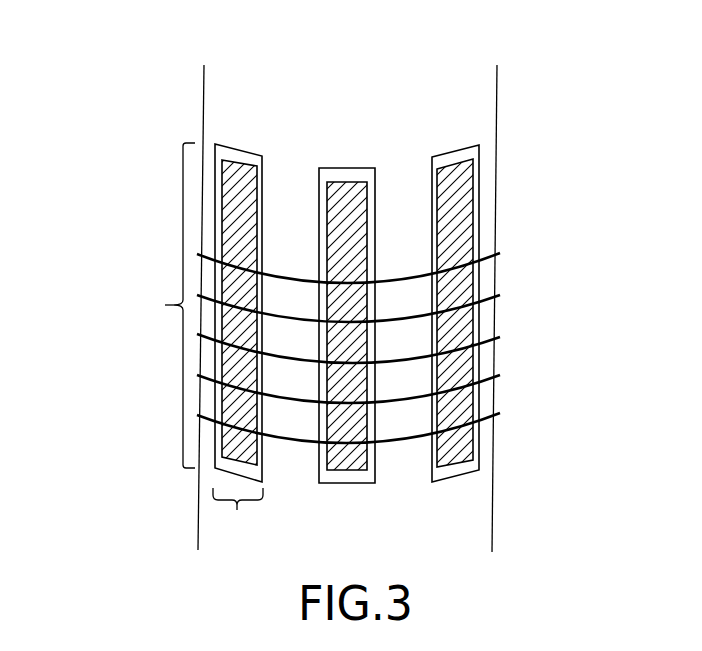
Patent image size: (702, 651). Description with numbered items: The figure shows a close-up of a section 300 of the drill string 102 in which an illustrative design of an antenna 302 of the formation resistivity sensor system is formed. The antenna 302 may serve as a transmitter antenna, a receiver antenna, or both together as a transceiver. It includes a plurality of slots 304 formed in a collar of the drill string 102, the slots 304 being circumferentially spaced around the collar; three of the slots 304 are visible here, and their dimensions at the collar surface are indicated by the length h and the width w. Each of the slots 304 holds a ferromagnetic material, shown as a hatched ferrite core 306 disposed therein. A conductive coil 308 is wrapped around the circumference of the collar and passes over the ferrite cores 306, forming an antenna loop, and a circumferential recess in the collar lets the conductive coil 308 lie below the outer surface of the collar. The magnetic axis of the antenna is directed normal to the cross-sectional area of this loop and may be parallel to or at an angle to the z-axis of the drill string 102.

The section of the drill string 300 is at (113, 80).
The antenna 302 is at (144, 212).
The slots 304 is at (237, 147).
The ferrite core 306 is at (242, 240).
The conductive coil 308 is at (397, 444).
The drill string 102 is at (497, 112).